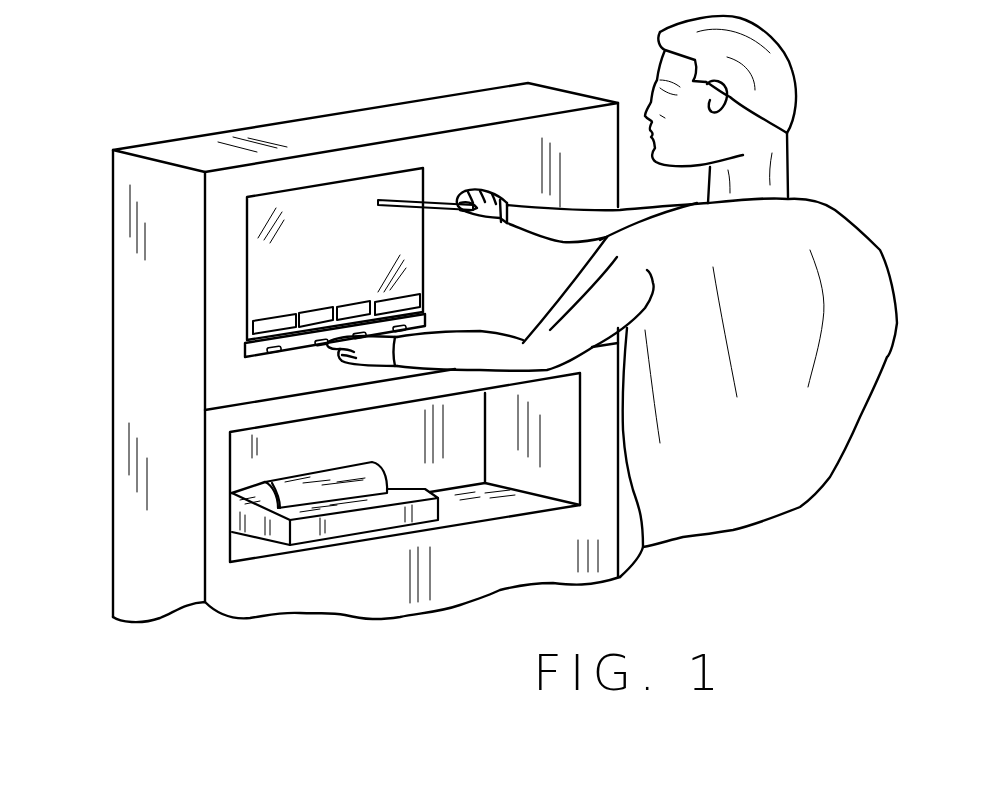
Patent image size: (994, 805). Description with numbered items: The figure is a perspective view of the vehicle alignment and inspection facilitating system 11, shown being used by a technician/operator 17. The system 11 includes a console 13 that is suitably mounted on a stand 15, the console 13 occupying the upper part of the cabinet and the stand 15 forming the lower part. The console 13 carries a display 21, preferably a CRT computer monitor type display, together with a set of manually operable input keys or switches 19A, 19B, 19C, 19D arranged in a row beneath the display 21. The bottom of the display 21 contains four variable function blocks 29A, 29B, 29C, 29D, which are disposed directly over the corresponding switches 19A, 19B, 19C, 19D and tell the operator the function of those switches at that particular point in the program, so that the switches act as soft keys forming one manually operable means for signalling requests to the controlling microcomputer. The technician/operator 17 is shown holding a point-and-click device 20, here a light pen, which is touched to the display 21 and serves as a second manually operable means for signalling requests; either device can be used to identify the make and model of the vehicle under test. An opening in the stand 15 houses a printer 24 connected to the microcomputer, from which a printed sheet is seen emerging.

The vehicle alignment and inspection facilitating system 11 is at (250, 62).
The console 13 is at (470, 93).
The stand 15 is at (113, 487).
The technician/operator 17 is at (780, 40).
The input key 19A is at (260, 356).
The input key 19B is at (322, 347).
The input key 19C is at (362, 334).
The input key 19D is at (405, 329).
The point-and-click device 20 is at (432, 200).
The display 21 is at (344, 220).
The printer 24 is at (405, 483).
The variable function block 29A is at (267, 323).
The variable function block 29B is at (315, 317).
The variable function block 29C is at (353, 305).
The variable function block 29D is at (393, 302).